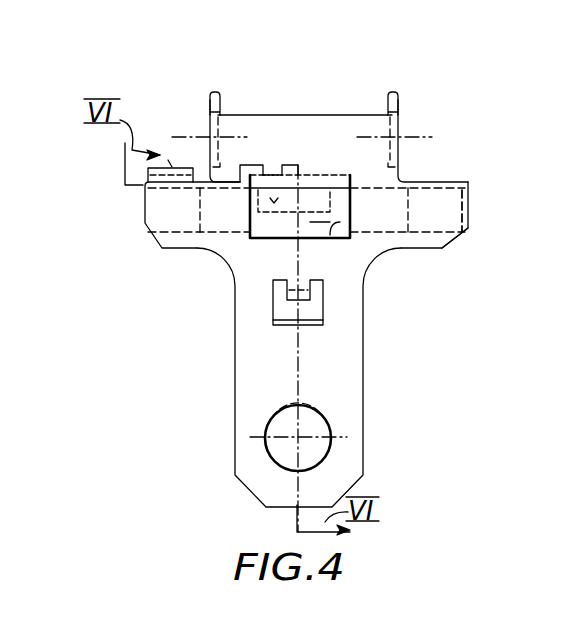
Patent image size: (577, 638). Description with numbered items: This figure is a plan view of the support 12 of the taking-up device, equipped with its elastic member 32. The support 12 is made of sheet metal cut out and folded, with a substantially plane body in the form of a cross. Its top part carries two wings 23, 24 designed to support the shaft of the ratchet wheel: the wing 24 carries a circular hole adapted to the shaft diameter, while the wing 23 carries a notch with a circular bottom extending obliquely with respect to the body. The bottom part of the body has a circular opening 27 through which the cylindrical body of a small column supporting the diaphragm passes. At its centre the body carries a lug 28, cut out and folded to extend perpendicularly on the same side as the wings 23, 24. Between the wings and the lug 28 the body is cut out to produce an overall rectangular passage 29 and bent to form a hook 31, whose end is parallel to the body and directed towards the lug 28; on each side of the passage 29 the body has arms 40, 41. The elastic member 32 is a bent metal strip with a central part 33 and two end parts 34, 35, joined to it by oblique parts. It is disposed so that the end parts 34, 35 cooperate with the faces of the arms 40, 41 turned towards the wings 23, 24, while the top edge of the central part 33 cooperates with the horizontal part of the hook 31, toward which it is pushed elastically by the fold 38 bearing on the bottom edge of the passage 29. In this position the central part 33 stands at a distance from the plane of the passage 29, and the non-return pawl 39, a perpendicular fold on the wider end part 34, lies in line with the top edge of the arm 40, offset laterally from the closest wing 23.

The support 12 is at (363, 367).
The wing 23 is at (210, 99).
The wing 24 is at (398, 102).
The circular opening 27 is at (272, 455).
The lug 28 is at (289, 300).
The passage 29 is at (332, 224).
The hook 31 is at (280, 163).
The elastic member 32 is at (436, 182).
The central part 33 is at (312, 222).
The end part 34 is at (162, 220).
The end part 35 is at (458, 236).
The fold 38 is at (290, 234).
The non-return pawl 39 is at (172, 167).
The arm 40 is at (177, 208).
The arm 41 is at (443, 212).